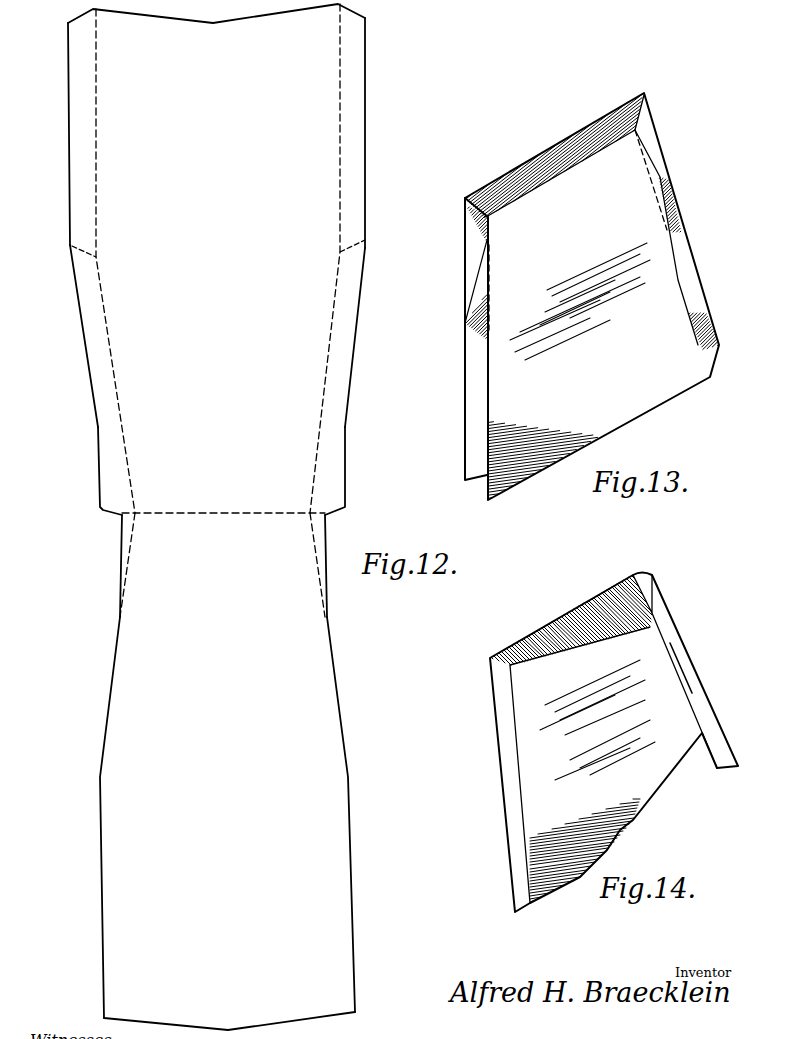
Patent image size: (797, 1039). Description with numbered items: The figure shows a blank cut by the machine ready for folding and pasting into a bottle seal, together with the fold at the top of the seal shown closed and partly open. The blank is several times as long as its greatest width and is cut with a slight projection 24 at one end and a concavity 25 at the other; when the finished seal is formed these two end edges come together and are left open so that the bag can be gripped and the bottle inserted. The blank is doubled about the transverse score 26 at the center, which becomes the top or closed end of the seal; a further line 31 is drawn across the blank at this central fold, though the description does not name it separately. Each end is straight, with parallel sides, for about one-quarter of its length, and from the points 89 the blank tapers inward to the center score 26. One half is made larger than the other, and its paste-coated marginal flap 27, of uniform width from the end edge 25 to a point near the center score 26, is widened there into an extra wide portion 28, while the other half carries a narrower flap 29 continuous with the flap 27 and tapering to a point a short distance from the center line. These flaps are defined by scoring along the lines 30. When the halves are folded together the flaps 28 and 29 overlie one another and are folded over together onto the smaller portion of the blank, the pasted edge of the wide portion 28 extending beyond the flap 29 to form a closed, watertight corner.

In FIG. 12, the projection 24 is at (212, 1027).
In FIG. 12, the concavity 25 is at (205, 15).
In FIG. 12, the transverse score 26 is at (182, 515).
In FIG. 13, the transverse score 26 is at (541, 163).
In FIG. 14, the transverse score 26 is at (555, 620).
In FIG. 12, the marginal flap 27 is at (355, 163).
In FIG. 12, the extra wide portion 28 is at (108, 470).
In FIG. 13, the extra wide portion 28 is at (473, 232).
In FIG. 14, the extra wide portion 28 is at (657, 607).
In FIG. 12, the flap 29 is at (127, 533).
In FIG. 13, the flap 29 is at (467, 308).
In FIG. 14, the flap 29 is at (672, 645).
In FIG. 12, the scoring lines 30 is at (342, 213).
In FIG. 12, the transverse fold line 31 is at (135, 513).
In FIG. 12, the points 89 is at (367, 250).